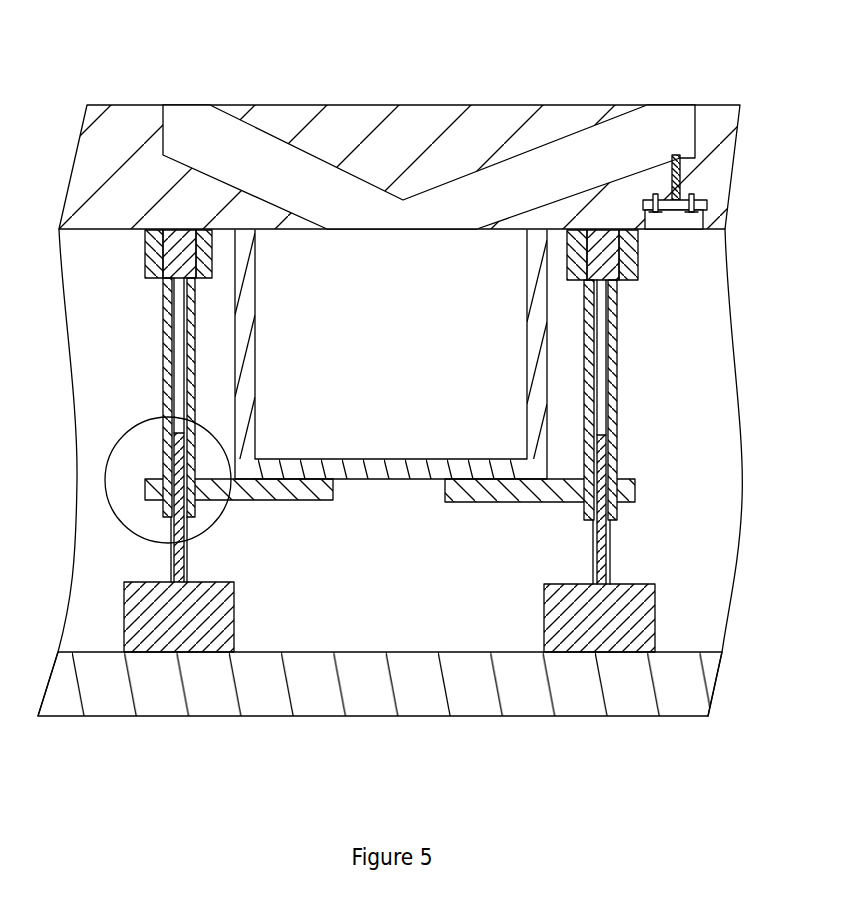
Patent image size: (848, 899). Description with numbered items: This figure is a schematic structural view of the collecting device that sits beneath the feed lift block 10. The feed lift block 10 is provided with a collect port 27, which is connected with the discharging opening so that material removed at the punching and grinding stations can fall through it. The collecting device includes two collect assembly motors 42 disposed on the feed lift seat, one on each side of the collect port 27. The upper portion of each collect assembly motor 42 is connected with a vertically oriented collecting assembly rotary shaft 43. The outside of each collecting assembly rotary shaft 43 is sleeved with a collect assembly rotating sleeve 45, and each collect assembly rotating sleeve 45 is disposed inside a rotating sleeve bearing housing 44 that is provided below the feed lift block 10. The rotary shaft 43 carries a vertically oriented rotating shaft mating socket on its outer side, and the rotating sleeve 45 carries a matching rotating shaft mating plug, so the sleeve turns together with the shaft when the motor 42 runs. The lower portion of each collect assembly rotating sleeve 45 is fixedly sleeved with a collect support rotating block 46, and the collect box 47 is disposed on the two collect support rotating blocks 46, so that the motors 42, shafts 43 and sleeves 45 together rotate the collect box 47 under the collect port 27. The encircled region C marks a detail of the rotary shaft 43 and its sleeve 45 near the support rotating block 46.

The feed lift block 10 is at (393, 130).
The collect port 27 is at (208, 143).
The collect assembly motor 42 is at (190, 607).
The collecting assembly rotary shaft 43 is at (610, 545).
The rotating sleeve bearing housing 44 is at (578, 232).
The collect assembly rotating sleeve 45 is at (620, 405).
The collect support rotating block 46 is at (480, 500).
The collect box 47 is at (372, 469).
The detail region C is at (149, 425).